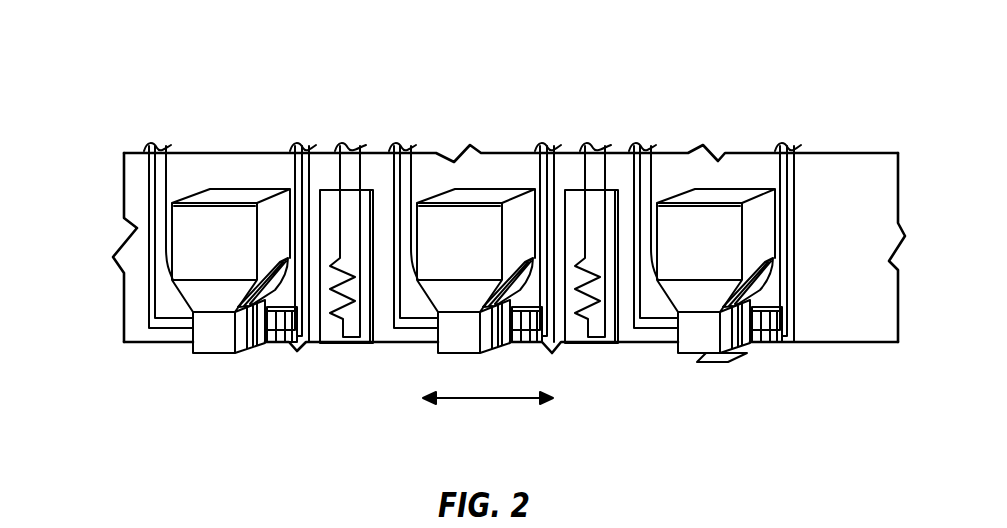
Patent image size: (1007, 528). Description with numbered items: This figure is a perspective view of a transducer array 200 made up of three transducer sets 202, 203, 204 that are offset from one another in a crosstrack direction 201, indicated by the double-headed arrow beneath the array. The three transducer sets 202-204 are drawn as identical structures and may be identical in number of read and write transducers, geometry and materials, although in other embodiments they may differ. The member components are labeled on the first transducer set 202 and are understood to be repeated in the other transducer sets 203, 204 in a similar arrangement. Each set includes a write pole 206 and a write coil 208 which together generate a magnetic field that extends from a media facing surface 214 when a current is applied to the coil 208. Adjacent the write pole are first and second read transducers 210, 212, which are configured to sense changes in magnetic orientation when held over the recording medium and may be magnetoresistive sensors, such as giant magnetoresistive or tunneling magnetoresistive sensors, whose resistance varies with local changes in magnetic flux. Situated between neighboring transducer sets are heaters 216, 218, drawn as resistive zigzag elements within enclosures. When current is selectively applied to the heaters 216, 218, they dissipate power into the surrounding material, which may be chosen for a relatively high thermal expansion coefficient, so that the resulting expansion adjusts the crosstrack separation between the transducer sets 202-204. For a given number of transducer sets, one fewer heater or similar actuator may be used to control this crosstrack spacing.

The transducer array 200 is at (390, 72).
The crosstrack direction 201 is at (482, 402).
The transducer set 202 is at (180, 249).
The transducer set 203 is at (476, 110).
The transducer set 204 is at (715, 244).
The write pole 206 is at (215, 353).
The write coil 208 is at (165, 230).
The first read transducer 210 is at (268, 345).
The second read transducer 212 is at (288, 345).
The media facing surface 214 is at (720, 363).
The heater 216 is at (365, 344).
The heater 218 is at (593, 344).